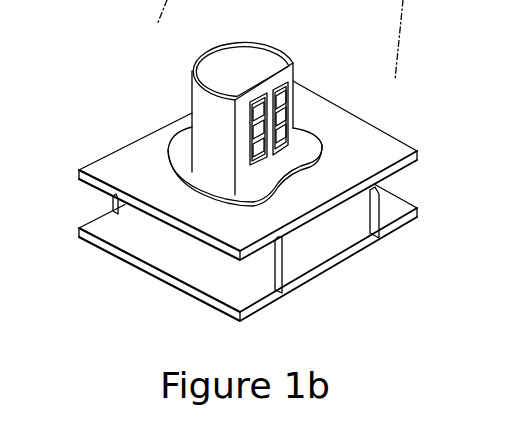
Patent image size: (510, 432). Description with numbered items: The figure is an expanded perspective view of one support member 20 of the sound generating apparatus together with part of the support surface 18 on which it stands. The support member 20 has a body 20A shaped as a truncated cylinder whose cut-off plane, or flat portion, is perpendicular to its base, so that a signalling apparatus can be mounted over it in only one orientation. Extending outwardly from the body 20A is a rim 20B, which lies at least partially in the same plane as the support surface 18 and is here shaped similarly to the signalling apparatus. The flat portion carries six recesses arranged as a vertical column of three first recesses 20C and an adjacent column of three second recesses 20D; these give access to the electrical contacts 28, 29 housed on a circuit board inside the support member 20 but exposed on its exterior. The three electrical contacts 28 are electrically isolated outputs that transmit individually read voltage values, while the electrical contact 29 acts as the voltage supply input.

The support surface 18 is at (376, 146).
The electrical contact 29 is at (280, 116).
The electrical contact 28 is at (250, 118).
The support member 20 is at (294, 62).
The body 20A is at (207, 124).
The rim 20B is at (283, 132).
The first recesses 20C is at (262, 100).
The second recesses 20D is at (276, 92).